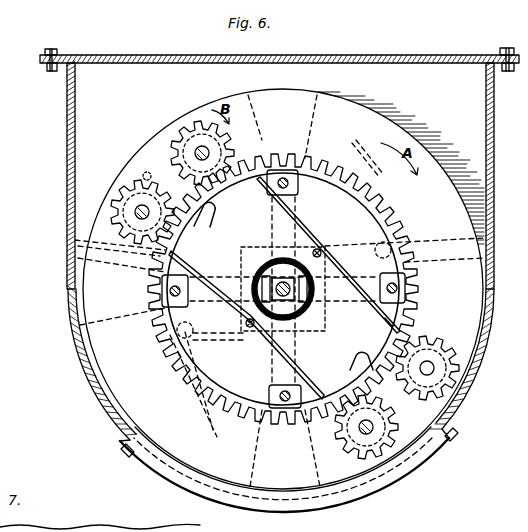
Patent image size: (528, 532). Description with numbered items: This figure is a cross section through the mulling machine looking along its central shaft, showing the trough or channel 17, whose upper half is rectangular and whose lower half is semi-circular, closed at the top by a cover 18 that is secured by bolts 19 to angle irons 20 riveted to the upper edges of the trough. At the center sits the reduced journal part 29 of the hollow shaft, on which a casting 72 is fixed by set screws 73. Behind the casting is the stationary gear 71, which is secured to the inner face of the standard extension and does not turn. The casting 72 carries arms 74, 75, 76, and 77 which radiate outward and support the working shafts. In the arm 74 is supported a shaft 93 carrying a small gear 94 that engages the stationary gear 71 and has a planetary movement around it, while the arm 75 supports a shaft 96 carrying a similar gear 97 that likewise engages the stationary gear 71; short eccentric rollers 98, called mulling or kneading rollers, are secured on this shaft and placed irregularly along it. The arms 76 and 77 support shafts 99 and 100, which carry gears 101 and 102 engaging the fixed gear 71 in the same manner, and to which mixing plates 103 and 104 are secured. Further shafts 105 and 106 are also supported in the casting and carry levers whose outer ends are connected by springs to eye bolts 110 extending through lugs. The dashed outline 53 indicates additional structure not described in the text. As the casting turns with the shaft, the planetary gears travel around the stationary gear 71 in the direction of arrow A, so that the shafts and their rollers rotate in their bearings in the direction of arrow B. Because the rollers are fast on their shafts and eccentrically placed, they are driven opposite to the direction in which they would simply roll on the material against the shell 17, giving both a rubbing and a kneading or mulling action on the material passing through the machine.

The trough or channel 17 is at (77, 352).
The cover 18 is at (345, 52).
The bolts 19 is at (58, 43).
The angle irons 20 is at (67, 85).
The reduced part of shaft 29 is at (310, 318).
The carrier plate outline (dashed) 53 is at (127, 314).
The stationary gear 71 is at (200, 388).
The casting 72 is at (283, 289).
The set screws 73 is at (320, 250).
The arm 74 is at (262, 192).
The arm 75 is at (349, 369).
The arm 76 is at (209, 227).
The arm 77 is at (380, 327).
The shaft 93 is at (198, 150).
The small gear 94 is at (201, 122).
The shaft 96 is at (369, 432).
The gear 97 is at (414, 420).
The eccentric rollers 98 is at (407, 458).
The shaft 99 is at (137, 207).
The shaft 100 is at (444, 360).
The gear 101 is at (128, 178).
The gear 102 is at (427, 337).
The mixing plate 103 is at (78, 246).
The mixing plate 104 is at (464, 373).
The shaft 105 is at (398, 244).
The shaft 106 is at (183, 335).
The eye bolts 110 is at (280, 497).